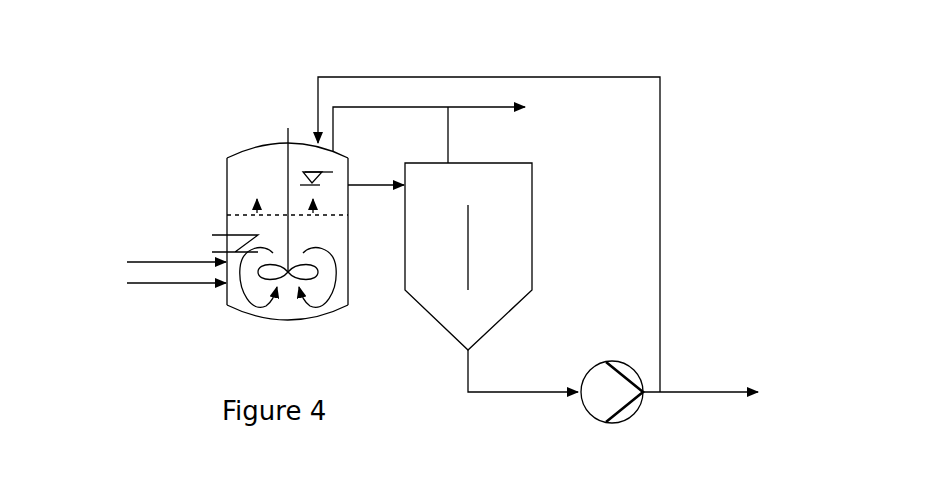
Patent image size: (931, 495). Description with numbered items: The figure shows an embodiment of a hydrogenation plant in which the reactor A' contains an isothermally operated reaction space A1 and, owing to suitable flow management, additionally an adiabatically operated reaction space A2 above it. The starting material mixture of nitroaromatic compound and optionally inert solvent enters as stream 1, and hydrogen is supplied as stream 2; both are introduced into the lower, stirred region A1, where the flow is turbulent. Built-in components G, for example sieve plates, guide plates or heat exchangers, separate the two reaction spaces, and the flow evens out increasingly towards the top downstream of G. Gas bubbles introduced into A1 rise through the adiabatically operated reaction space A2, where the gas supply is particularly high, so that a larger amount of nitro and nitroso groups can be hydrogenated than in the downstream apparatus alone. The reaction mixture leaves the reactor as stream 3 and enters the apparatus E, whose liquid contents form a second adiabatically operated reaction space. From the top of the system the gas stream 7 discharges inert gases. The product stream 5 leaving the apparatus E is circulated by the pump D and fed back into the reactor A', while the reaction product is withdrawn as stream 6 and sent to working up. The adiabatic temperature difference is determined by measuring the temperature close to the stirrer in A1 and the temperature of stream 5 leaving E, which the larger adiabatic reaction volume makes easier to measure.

The reactor A' is at (274, 201).
The adiabatically operated reaction space A2 is at (245, 198).
The built-in components G is at (238, 217).
The hydrogen stream 2 is at (178, 251).
The starting material mixture stream 1 is at (162, 283).
The isothermally operated reaction space A1 is at (257, 293).
The reaction mixture stream 3 is at (376, 167).
The apparatus E is at (491, 249).
The gas stream 7 is at (442, 122).
The pump D is at (612, 392).
The product stream 5 is at (489, 215).
The reaction product stream 6 is at (715, 394).